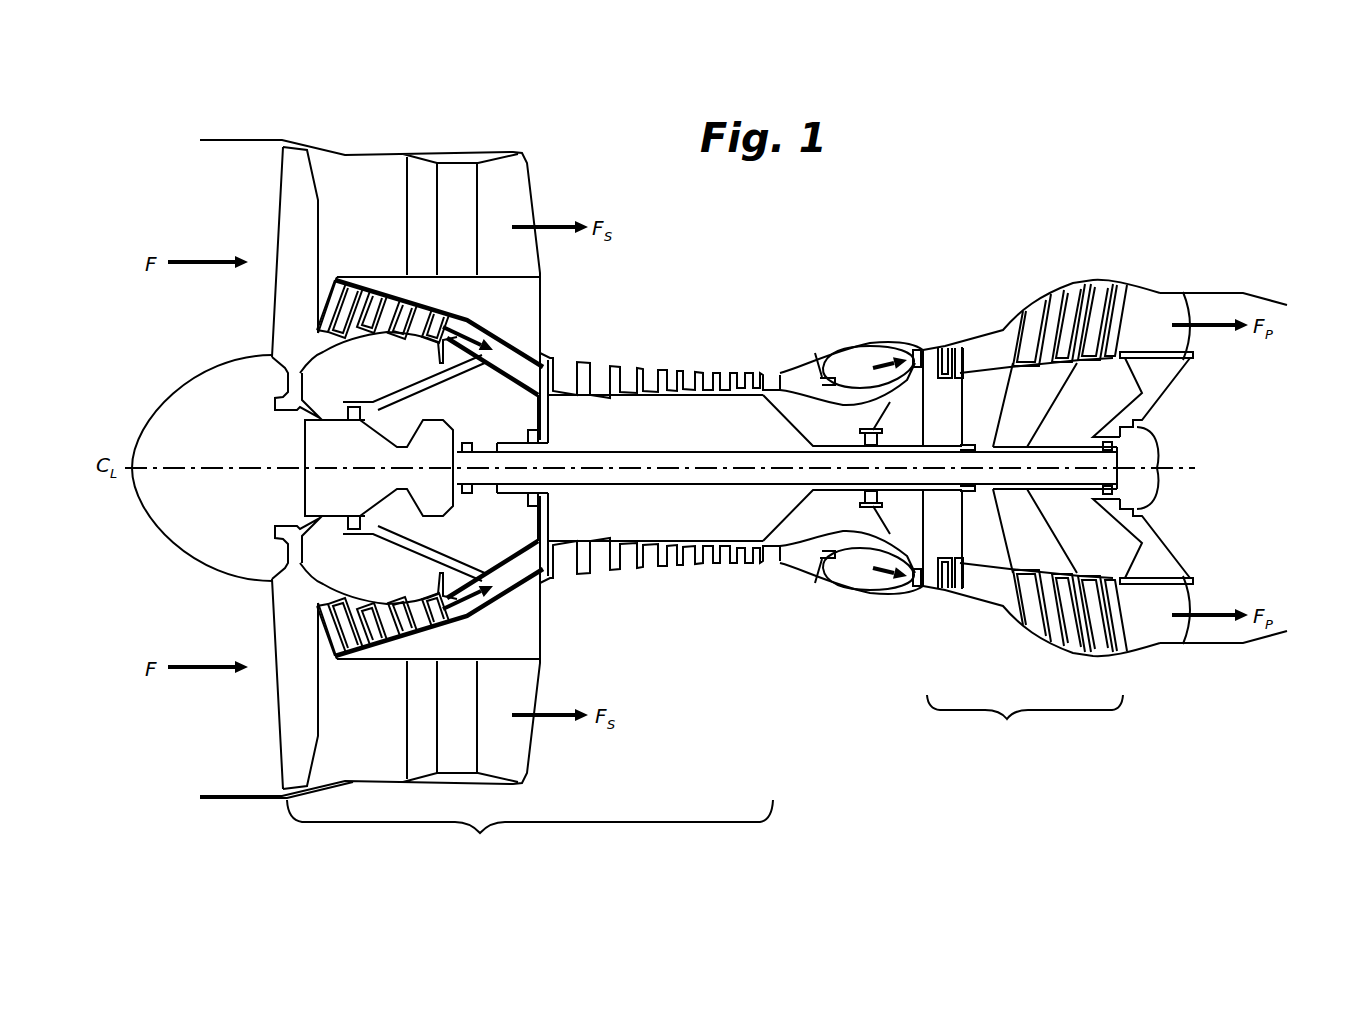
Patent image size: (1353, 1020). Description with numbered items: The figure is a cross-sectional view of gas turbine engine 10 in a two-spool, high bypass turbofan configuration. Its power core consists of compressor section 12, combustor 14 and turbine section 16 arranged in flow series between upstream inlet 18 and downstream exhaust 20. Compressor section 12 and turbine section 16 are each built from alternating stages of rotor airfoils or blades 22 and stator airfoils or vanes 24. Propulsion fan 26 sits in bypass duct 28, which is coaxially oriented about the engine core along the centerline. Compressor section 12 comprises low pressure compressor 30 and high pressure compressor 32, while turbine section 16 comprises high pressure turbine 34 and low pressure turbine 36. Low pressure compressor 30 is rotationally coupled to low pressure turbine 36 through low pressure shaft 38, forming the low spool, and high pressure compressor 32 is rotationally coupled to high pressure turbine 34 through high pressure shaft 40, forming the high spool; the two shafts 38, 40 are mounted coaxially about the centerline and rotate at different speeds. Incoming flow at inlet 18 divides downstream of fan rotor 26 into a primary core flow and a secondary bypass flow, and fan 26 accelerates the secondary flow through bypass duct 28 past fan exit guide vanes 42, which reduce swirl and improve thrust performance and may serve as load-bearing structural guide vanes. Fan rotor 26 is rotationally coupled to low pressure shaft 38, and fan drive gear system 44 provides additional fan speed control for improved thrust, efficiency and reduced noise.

The gas turbine engine 10 is at (176, 117).
The compressor section 12 is at (486, 818).
The combustor 14 is at (870, 345).
The turbine section 16 is at (1058, 513).
The inlet 18 is at (190, 351).
The exhaust 20 is at (1234, 418).
The rotor airfoils 22 is at (592, 377).
The stator airfoils 24 is at (628, 373).
The propulsion fan 26 is at (292, 223).
The bypass duct 28 is at (382, 221).
The low pressure compressor 30 is at (483, 623).
The high pressure compressor 32 is at (677, 570).
The high pressure turbine 34 is at (948, 602).
The low pressure turbine 36 is at (1025, 642).
The low pressure shaft 38 is at (703, 480).
The high pressure shaft 40 is at (787, 500).
The fan exit guide vanes 42 is at (417, 173).
The fan drive gear system 44 is at (443, 418).